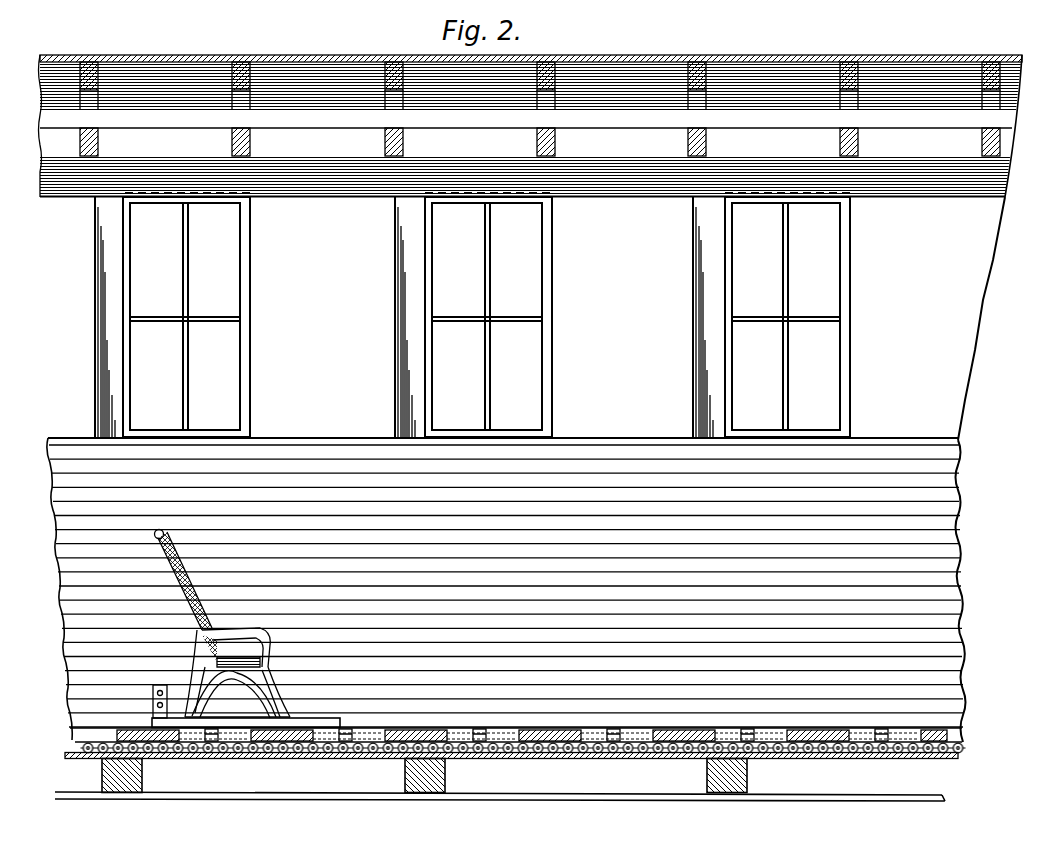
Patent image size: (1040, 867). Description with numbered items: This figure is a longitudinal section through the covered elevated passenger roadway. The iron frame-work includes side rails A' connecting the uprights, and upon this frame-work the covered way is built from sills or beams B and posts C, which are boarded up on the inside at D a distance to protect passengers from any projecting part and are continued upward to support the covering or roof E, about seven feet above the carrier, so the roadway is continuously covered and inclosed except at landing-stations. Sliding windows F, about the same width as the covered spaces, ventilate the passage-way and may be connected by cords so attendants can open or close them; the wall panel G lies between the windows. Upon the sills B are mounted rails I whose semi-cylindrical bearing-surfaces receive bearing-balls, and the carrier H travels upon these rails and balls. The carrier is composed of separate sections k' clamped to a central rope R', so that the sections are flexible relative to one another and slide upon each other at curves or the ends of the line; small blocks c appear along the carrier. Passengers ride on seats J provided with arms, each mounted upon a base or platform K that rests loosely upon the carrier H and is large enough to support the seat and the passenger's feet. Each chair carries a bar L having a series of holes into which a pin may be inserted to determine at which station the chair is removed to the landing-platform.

The covering or roof E is at (533, 126).
The sliding windows F is at (490, 304).
The wall panel G is at (646, 297).
The boarding D is at (480, 512).
The posts C is at (981, 469).
The seats J is at (223, 624).
The bar L is at (159, 692).
The bases or platforms K is at (246, 715).
The carrier sections k' is at (532, 719).
The block c is at (486, 710).
The carrier H is at (524, 732).
The rails I is at (958, 757).
The sills or beams B is at (435, 776).
The side rails A' is at (500, 784).
The rope R' is at (523, 765).